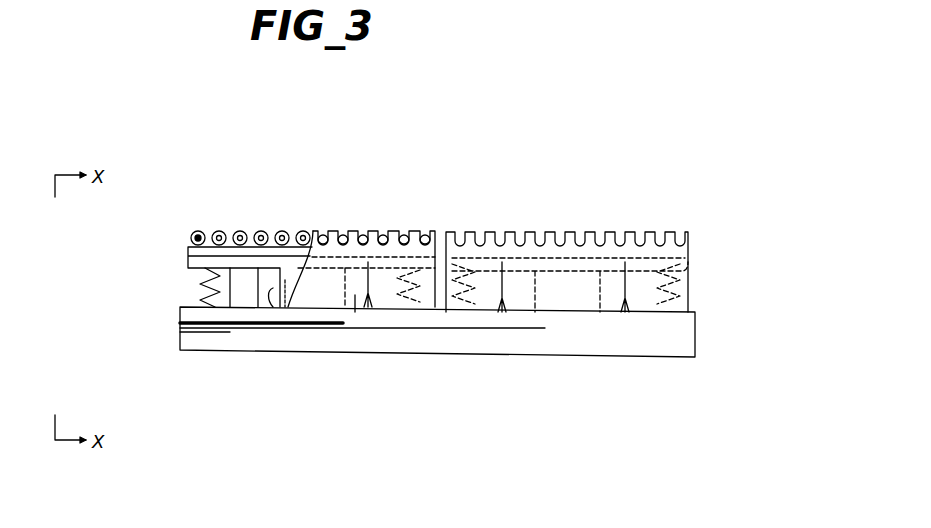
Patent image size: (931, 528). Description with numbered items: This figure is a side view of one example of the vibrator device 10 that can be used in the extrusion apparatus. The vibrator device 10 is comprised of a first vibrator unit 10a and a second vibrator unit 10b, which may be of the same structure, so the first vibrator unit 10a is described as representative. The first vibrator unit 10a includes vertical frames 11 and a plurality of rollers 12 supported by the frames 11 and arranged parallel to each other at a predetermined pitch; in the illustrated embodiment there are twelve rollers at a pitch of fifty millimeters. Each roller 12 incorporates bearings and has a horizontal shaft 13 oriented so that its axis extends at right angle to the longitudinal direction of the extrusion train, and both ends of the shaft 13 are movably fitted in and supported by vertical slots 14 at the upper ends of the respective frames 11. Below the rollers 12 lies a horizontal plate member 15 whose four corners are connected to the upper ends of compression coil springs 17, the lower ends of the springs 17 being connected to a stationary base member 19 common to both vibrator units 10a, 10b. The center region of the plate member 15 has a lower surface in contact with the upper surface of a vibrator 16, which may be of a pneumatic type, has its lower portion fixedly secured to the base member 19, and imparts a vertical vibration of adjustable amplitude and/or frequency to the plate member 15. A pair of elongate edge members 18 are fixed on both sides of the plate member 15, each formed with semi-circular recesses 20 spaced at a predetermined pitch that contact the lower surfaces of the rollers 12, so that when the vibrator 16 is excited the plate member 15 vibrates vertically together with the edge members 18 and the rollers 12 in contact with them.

The vibrator device 10 is at (440, 168).
The first vibrator unit 10a is at (361, 215).
The second vibrator unit 10b is at (569, 192).
The vertical frames 11 is at (355, 295).
The rollers 12 is at (278, 232).
The horizontal shaft 13 is at (195, 232).
The vertical slots 14 is at (313, 192).
The horizontal plate member 15 is at (237, 268).
The vibrator 16 is at (273, 307).
The compression coil springs 17 is at (200, 280).
The elongate edge members 18 is at (187, 250).
The stationary base member 19 is at (470, 357).
The semi-circular recesses 20 is at (260, 241).